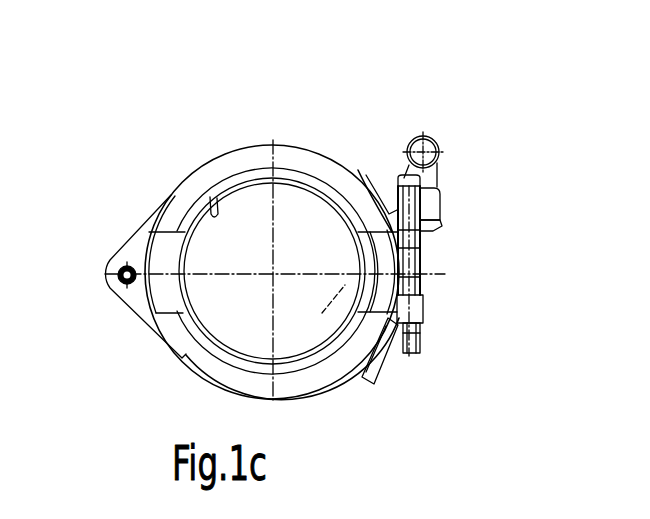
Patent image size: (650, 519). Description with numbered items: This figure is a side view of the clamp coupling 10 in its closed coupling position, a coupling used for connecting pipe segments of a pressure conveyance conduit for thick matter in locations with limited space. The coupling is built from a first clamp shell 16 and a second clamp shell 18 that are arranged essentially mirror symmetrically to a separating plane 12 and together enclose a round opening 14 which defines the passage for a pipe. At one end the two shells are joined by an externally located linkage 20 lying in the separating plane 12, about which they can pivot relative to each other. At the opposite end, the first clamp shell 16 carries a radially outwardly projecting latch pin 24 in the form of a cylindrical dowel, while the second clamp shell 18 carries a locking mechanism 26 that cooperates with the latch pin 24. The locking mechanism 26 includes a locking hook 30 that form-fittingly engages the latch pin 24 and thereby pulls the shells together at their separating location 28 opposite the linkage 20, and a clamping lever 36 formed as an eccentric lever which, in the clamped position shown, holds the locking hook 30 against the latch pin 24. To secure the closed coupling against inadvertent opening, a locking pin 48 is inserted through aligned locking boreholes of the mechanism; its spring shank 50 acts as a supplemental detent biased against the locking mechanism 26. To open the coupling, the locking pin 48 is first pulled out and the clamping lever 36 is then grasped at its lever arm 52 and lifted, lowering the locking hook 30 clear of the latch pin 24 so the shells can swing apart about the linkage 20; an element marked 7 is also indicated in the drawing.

The hinge pin of bolt head 7 is at (436, 140).
The clamp coupling 10 is at (332, 140).
The separating plane 12 is at (322, 307).
The round opening 14 is at (214, 197).
The first clamp shell 16 is at (302, 392).
The second clamp shell 18 is at (291, 160).
The linkage 20 is at (125, 268).
The latch pin 24 is at (424, 327).
The locking mechanism 26 is at (428, 230).
The separating location 28 is at (358, 170).
The locking hook 30 is at (415, 354).
The clamping lever 36 is at (379, 383).
The locking pin 48 is at (426, 136).
The spring shank 50 is at (440, 205).
The lever arm 52 is at (408, 422).